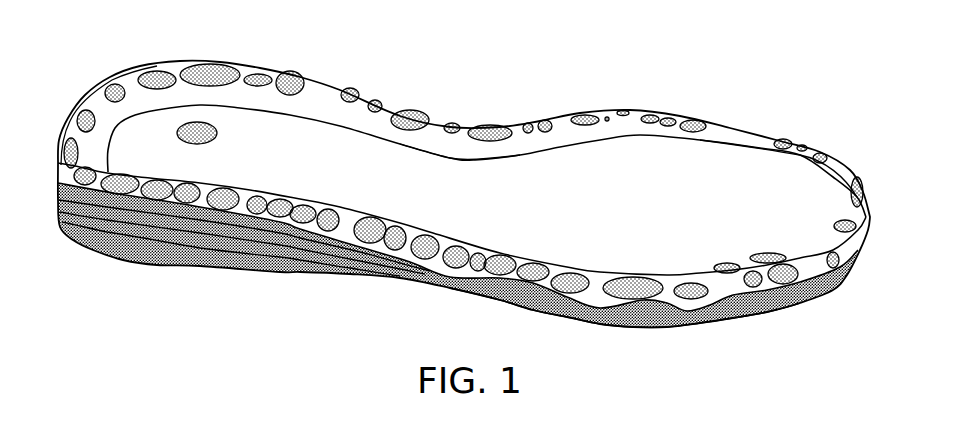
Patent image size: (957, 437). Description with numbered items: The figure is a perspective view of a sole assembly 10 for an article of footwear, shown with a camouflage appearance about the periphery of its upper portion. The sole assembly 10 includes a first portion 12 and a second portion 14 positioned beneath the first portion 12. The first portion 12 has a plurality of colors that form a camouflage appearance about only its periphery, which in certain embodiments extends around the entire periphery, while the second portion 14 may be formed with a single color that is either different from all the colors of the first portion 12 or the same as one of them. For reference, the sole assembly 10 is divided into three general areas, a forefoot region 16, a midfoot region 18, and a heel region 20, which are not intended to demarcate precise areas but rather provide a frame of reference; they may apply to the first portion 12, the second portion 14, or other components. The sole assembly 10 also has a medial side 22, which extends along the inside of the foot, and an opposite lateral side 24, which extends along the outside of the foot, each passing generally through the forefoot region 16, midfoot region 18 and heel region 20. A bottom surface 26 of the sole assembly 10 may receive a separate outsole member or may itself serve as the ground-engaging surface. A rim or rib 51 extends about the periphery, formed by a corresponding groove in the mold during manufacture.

The sole assembly 10 is at (717, 44).
The first portion 12 is at (560, 127).
The second portion 14 is at (217, 267).
The forefoot region 16 is at (787, 190).
The midfoot region 18 is at (447, 179).
The heel region 20 is at (247, 160).
The medial side 22 is at (457, 125).
The lateral side 24 is at (540, 312).
The bottom surface 26 is at (667, 327).
The rim or rib 51 is at (295, 75).